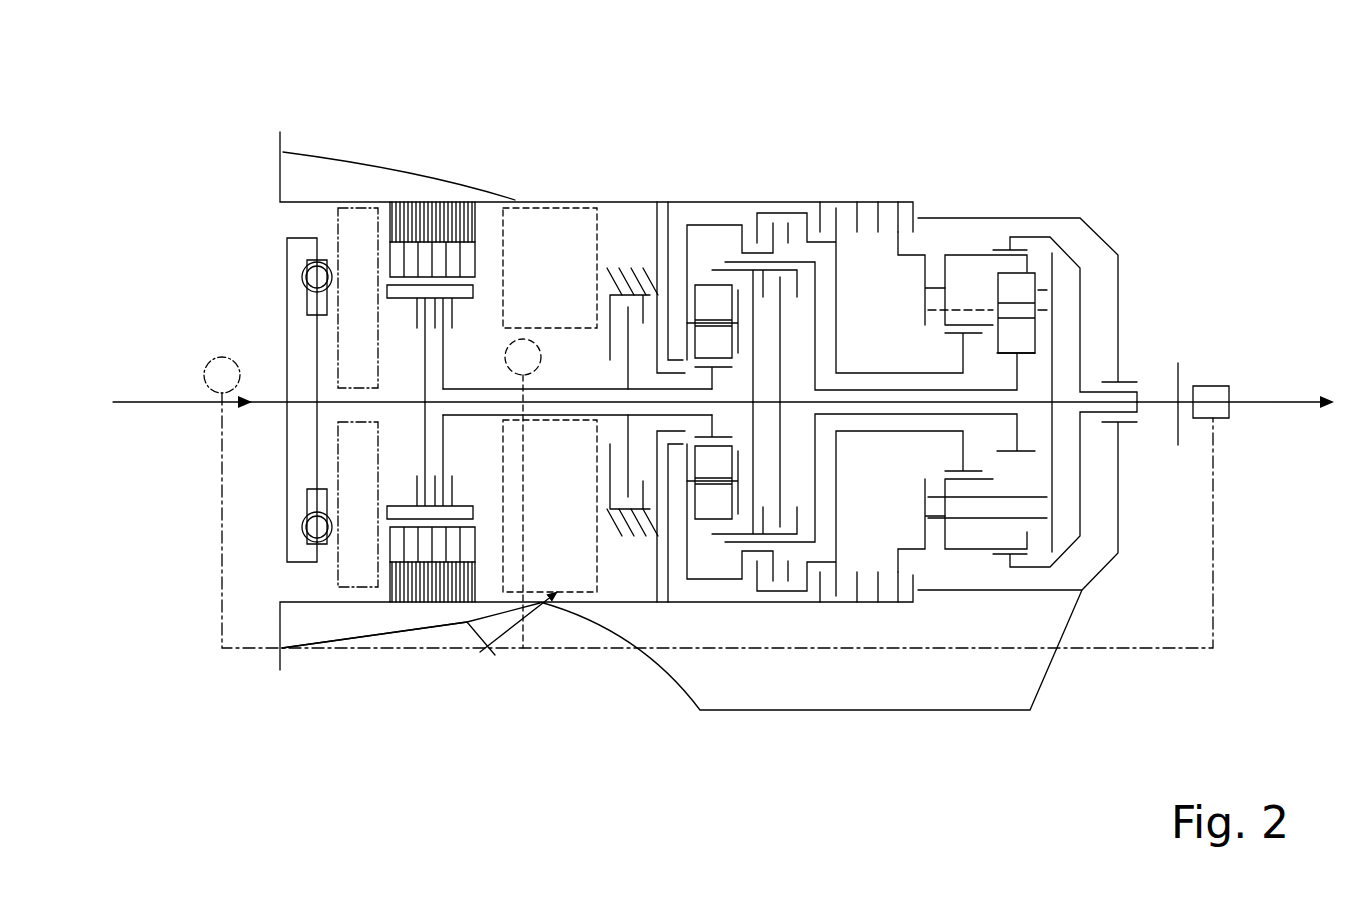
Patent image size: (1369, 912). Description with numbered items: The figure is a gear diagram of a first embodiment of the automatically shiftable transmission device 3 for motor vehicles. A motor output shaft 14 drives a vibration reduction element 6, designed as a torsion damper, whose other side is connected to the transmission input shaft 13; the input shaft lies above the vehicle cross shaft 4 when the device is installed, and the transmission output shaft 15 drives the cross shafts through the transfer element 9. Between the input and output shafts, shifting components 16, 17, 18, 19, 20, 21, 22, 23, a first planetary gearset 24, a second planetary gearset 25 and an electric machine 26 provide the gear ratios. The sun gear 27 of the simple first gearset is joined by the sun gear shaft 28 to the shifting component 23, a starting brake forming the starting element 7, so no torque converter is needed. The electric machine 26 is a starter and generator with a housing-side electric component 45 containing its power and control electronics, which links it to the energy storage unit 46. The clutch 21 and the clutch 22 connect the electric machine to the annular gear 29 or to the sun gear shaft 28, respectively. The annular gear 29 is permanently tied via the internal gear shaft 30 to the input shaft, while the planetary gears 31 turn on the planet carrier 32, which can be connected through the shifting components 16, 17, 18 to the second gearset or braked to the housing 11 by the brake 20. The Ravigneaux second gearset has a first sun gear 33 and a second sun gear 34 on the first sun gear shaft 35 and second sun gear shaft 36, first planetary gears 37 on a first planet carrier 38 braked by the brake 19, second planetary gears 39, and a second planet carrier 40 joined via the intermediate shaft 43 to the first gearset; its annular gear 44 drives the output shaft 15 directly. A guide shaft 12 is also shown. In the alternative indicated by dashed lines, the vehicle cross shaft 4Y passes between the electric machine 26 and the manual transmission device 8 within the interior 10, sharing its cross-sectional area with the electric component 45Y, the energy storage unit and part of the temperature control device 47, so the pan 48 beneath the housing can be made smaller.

The transmission device 3 is at (250, 140).
The vehicle cross shaft 4 is at (210, 392).
The vehicle cross shaft 4Y is at (467, 622).
The vibration reduction element 6 is at (317, 300).
The starting element 7 is at (610, 257).
The manual transmission device 8 is at (773, 190).
The transfer element 9 is at (1222, 396).
The interior of the transmission device 10 is at (973, 553).
The transmission device housing 11 is at (1120, 510).
The guide shaft 12 is at (1125, 655).
The transmission input shaft 13 is at (333, 400).
The motor output shaft 14 is at (160, 392).
The transmission output shaft 15 is at (1157, 404).
The shifting component 16 is at (718, 565).
The shifting component 17 is at (772, 510).
The shifting component 18 is at (787, 575).
The shifting component 19 is at (888, 220).
The shifting component, brake 20 is at (830, 222).
The shifting component, clutch 21 is at (402, 318).
The shifting component, multi-disk clutch 22 is at (467, 318).
The shifting component, starting brake 23 is at (622, 265).
The first planetary gearset 24 is at (700, 280).
The second planetary gearset 25 is at (970, 250).
The electric machine 26 is at (427, 197).
The sun gear of the first planetary gearset 27 is at (687, 443).
The sun gear shaft 28 is at (633, 455).
The annular gear of the first planetary gearset 29 is at (718, 280).
The internal gear shaft 30 is at (642, 440).
The planetary gears of the first planetary gearset 31 is at (735, 487).
The planet carrier for the first planetary gearset 32 is at (683, 297).
The first sun gear of the second planetary gearset 33 is at (965, 338).
The second sun gear of the second planetary gearset 34 is at (1023, 353).
The first sun gear shaft of the second planetary gearset 35 is at (867, 433).
The second sun gear shaft of the second planetary gearset 36 is at (913, 417).
The first planetary gears of the second planetary gearset 37 is at (977, 287).
The first planet carrier of the second planetary gearset 38 is at (923, 272).
The second planetary gears of the second planetary gearset 39 is at (1018, 290).
The second planet carrier of the second planetary gearset 40 is at (1053, 330).
The intermediate shaft 43 is at (1120, 467).
The annular gear of the second planetary gearset 44 is at (1015, 243).
The electric component 45 is at (352, 225).
The electric component 45Y is at (548, 598).
The energy storage unit 46 is at (347, 560).
The temperature control device 47 is at (563, 240).
The pan 48 is at (845, 712).